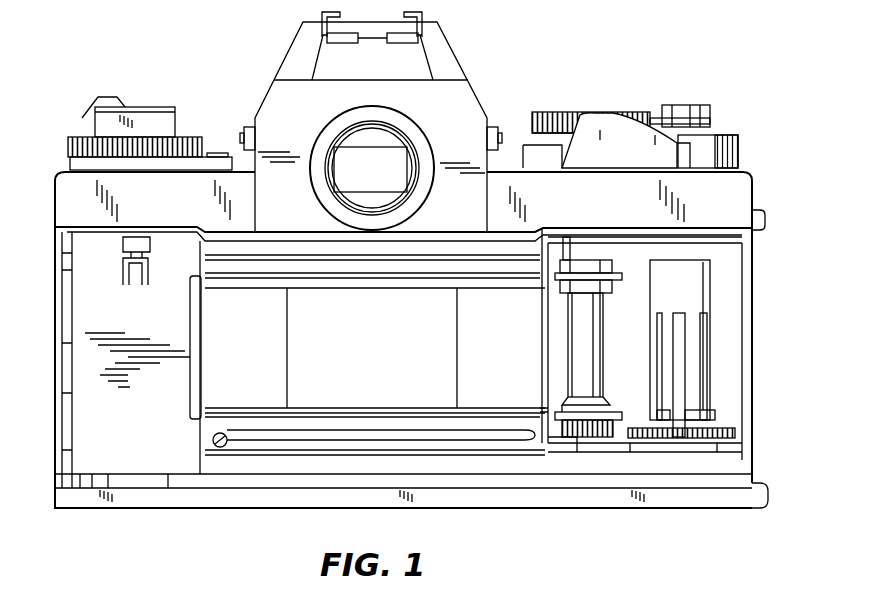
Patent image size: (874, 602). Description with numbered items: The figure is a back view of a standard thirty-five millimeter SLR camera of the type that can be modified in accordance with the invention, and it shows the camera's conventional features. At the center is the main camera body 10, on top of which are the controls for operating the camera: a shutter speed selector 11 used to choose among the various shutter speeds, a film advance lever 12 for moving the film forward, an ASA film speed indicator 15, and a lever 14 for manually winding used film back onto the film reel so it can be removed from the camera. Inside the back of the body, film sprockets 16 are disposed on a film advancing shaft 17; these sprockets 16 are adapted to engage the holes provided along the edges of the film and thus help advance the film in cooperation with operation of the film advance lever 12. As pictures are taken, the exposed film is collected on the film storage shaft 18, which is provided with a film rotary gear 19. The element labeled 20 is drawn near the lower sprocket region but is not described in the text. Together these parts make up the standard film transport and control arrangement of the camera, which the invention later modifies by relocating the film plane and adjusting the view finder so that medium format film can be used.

The main camera body 10 is at (747, 177).
The shutter speed selector 11 is at (535, 112).
The film advance lever 12 is at (600, 133).
The lever 14 is at (152, 107).
The ASA film speed indicator 15 is at (70, 137).
The film sprockets 16 is at (617, 280).
The film advancing shaft 17 is at (598, 362).
The film storage shaft 18 is at (690, 273).
The film rotary gear 19 is at (733, 433).
The coupling member 20 is at (555, 422).